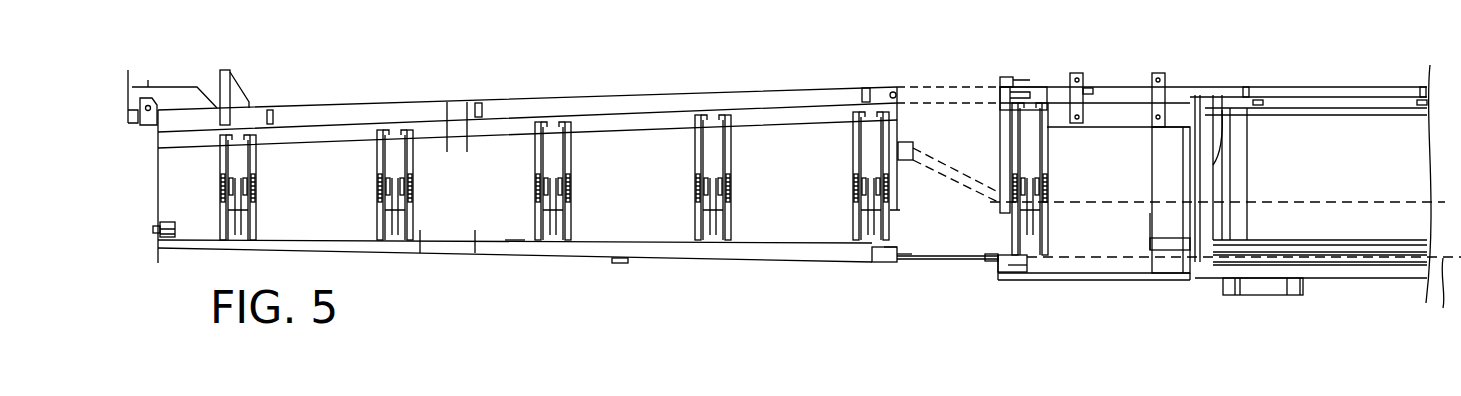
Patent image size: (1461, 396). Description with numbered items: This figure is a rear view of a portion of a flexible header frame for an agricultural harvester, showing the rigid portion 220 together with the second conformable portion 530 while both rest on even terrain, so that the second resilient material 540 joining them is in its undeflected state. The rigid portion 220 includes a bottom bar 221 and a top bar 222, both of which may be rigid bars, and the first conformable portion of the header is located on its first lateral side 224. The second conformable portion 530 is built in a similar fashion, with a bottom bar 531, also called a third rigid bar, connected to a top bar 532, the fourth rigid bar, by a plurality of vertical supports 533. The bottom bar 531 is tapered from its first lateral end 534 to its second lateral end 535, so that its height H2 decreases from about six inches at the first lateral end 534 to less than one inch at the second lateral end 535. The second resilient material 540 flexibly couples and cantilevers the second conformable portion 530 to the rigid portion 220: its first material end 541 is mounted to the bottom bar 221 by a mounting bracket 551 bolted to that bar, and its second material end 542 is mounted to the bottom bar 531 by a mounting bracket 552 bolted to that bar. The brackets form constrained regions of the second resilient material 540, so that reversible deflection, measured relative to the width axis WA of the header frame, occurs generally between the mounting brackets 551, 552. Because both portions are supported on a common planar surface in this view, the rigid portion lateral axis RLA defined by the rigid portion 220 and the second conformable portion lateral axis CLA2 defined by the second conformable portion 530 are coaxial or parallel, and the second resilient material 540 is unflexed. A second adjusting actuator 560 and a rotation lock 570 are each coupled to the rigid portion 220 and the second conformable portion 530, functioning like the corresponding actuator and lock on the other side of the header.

The second conformable portion 530 is at (796, 74).
The bottom bar 531 is at (790, 254).
The top bar 532 is at (828, 92).
The vertical supports 533 is at (725, 167).
The first lateral end 534 is at (897, 264).
The second lateral end 535 is at (160, 249).
The second resilient material 540 is at (948, 262).
The first material end 541 is at (985, 260).
The second material end 542 is at (907, 255).
The mounting bracket 551 is at (1008, 267).
The mounting bracket 552 is at (892, 248).
The second adjusting actuator 560 is at (898, 147).
The rotation lock 570 is at (940, 88).
The rigid portion 220 is at (1117, 78).
The bottom bar 221 is at (1105, 267).
The top bar 222 is at (1137, 95).
The first lateral side 224 is at (990, 185).
The second conformable portion lateral axis CLA2 is at (515, 240).
The height H2 is at (612, 262).
The rigid portion lateral axis RLA is at (1322, 202).
The width axis WA is at (1244, 314).